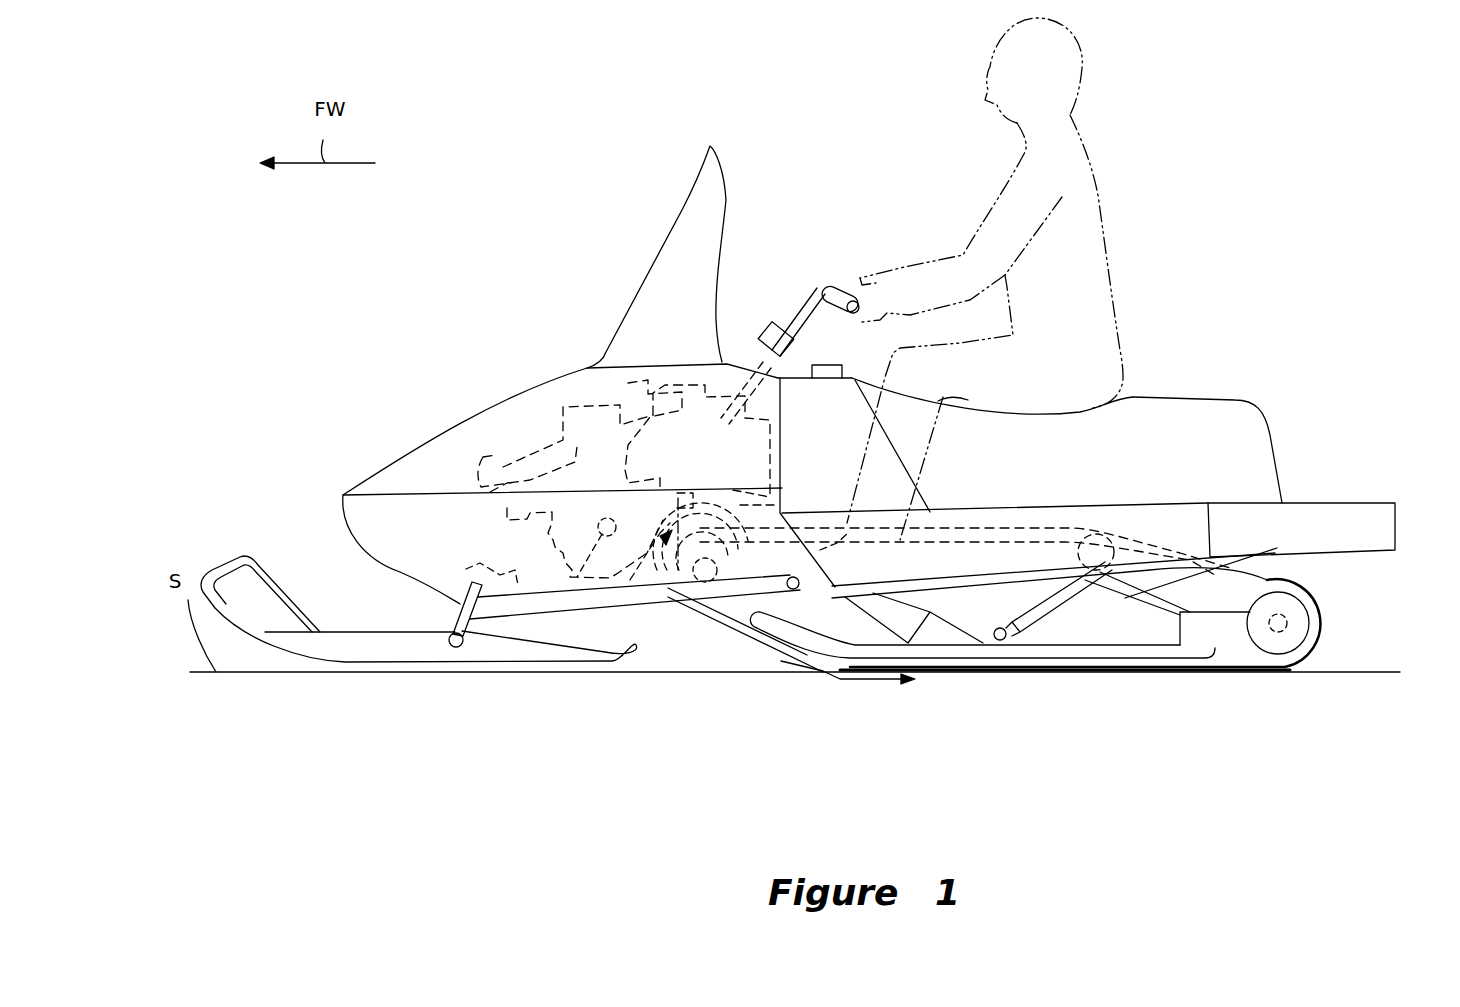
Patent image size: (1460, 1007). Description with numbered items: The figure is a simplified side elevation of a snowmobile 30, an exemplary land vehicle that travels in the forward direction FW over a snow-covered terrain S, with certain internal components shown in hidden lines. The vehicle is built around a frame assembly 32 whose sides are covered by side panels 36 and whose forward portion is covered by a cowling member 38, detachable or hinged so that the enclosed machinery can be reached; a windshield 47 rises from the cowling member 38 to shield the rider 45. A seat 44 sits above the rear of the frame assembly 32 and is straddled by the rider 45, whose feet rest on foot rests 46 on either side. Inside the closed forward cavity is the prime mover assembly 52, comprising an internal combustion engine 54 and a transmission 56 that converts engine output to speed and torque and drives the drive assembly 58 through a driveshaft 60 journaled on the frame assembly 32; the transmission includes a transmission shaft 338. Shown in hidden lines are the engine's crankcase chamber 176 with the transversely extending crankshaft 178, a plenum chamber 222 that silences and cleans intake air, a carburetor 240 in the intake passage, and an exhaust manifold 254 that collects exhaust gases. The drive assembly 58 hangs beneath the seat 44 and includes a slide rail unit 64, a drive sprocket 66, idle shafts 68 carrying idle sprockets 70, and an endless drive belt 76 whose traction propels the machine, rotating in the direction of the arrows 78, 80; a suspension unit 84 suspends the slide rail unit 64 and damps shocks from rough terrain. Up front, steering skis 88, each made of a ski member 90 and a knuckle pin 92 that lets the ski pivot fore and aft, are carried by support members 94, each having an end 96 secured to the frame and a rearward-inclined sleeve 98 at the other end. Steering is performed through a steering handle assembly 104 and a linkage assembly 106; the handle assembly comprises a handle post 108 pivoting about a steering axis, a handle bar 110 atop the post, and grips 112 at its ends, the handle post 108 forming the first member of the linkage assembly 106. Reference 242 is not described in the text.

The snowmobile 30 is at (1288, 208).
The frame assembly 32 is at (1292, 345).
The side panels 36 is at (380, 540).
The cowling member 38 is at (388, 473).
The seat 44 is at (1208, 422).
The rider 45 is at (1105, 190).
The foot rests 46 is at (1022, 568).
The windshield 47 is at (690, 232).
The prime mover assembly 52 is at (514, 428).
The internal combustion engine 54 is at (580, 392).
The transmission 56 is at (653, 583).
The drive assembly 58 is at (1095, 672).
The driveshaft 60 is at (646, 607).
The slide rail unit 64 is at (1090, 637).
The drive sprocket 66 is at (723, 570).
The idle shafts 68 is at (1297, 632).
The idle sprockets 70 is at (1265, 637).
The drive belt 76 is at (1180, 670).
The arrow 78 is at (862, 673).
The arrow 80 is at (1330, 595).
The suspension unit 84 is at (1040, 620).
The steering skis 88 is at (376, 679).
The ski member 90 is at (423, 677).
The knuckle pin 92 is at (475, 650).
The support members 94 is at (623, 600).
The end 96 is at (817, 592).
The sleeve 98 is at (457, 613).
The steering handle assembly 104 is at (789, 300).
The linkage assembly 106 is at (478, 568).
The handle post 108 is at (757, 357).
The handle bar 110 is at (813, 283).
The grips 112 is at (867, 267).
The crankcase chamber 176 is at (573, 580).
The crankshaft 178 is at (580, 580).
The plenum chamber 222 is at (822, 390).
The carburetor 240 is at (663, 380).
The seat cushion 242 is at (890, 470).
The exhaust manifold 254 is at (497, 467).
The transmission shaft 338 is at (782, 490).